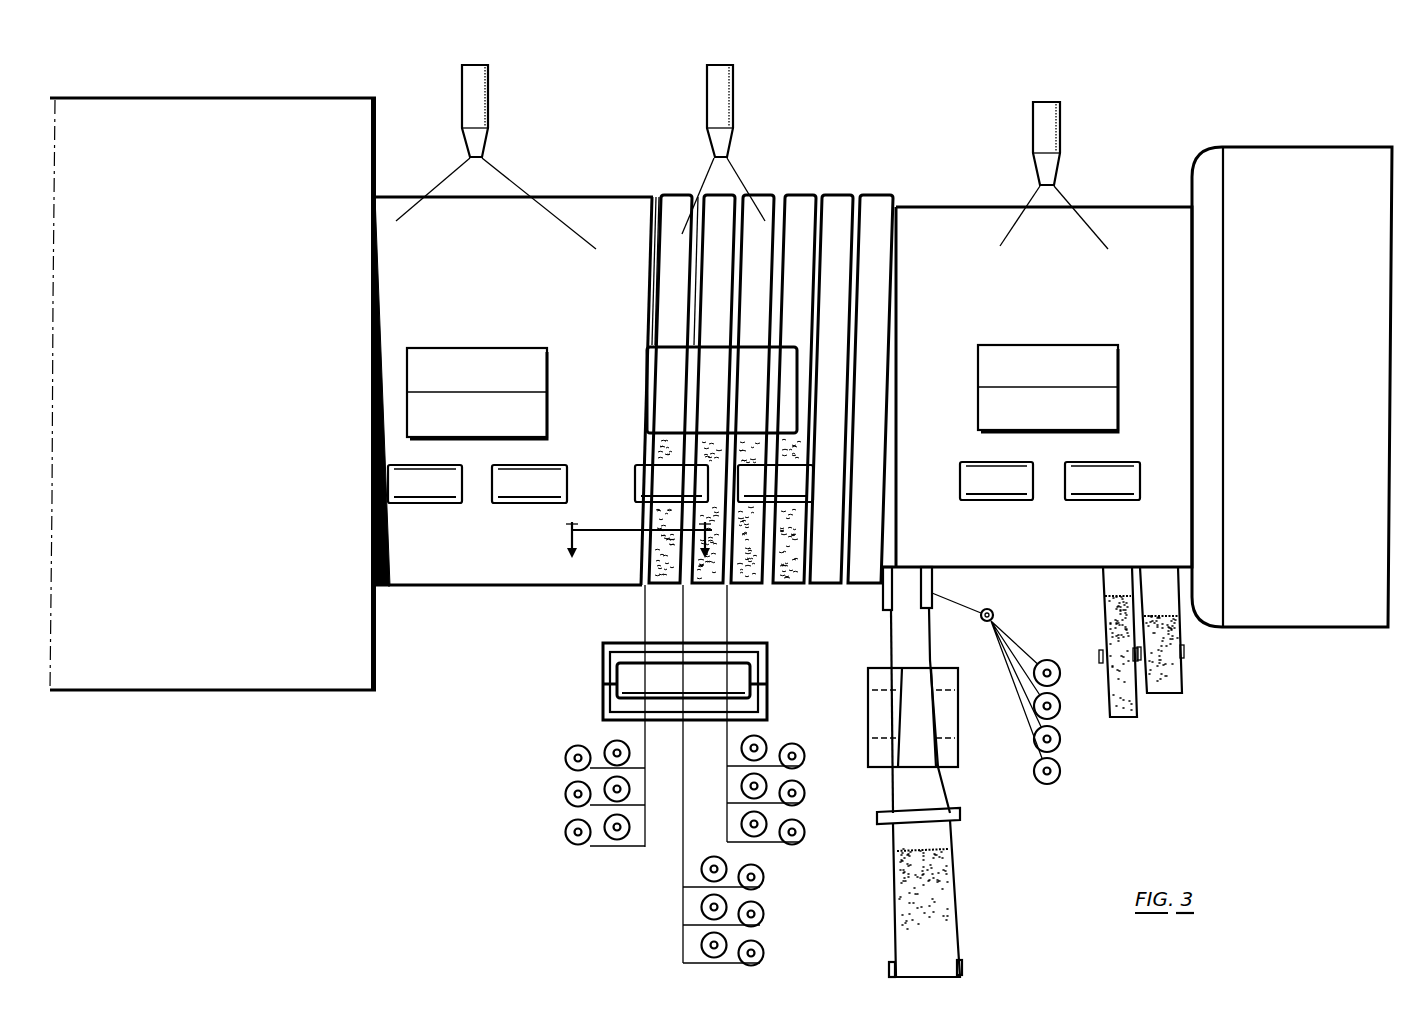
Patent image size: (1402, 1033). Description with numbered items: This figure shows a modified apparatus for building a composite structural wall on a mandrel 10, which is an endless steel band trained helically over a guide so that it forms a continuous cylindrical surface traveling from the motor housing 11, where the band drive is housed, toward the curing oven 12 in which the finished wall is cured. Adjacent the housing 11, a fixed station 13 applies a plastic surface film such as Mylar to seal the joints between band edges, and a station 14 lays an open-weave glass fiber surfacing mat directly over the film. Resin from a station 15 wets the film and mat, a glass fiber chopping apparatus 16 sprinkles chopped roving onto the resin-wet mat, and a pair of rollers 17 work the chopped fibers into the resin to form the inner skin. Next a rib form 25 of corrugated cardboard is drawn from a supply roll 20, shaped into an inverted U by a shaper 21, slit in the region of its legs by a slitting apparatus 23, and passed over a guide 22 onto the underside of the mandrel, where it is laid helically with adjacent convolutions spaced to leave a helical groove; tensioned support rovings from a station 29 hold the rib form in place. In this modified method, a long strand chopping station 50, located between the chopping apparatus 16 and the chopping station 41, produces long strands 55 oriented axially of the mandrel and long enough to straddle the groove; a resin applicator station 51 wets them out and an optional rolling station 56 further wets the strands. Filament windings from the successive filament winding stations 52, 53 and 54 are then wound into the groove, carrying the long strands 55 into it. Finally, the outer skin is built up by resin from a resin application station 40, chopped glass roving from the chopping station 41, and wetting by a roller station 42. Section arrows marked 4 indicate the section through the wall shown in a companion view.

The mandrel 10 is at (954, 197).
The housing 11 is at (1278, 164).
The curing oven 12 is at (207, 110).
The fixed station 13 is at (1183, 690).
The station 14 is at (1135, 712).
The station 15 is at (1061, 143).
The glass fiber chopping apparatus 16 is at (1058, 379).
The rollers 17 is at (1082, 500).
The supply roll 20 is at (945, 906).
The shaper 21 is at (868, 721).
The guide 22 is at (883, 604).
The slitting apparatus 23 is at (952, 823).
The rib form 25 is at (889, 304).
The station 29 is at (1061, 773).
The resin application station 40 is at (489, 106).
The chopping station 41 is at (487, 382).
The roller station 42 is at (510, 503).
The section line 4- 4 is at (638, 554).
The chopping station 50 is at (653, 351).
The resin applicator station 51 is at (734, 106).
The filament winding station 52 is at (805, 833).
The filament winding station 53 is at (765, 952).
The filament winding station 54 is at (566, 832).
The strands 55 is at (658, 447).
The rolling station 56 is at (638, 500).